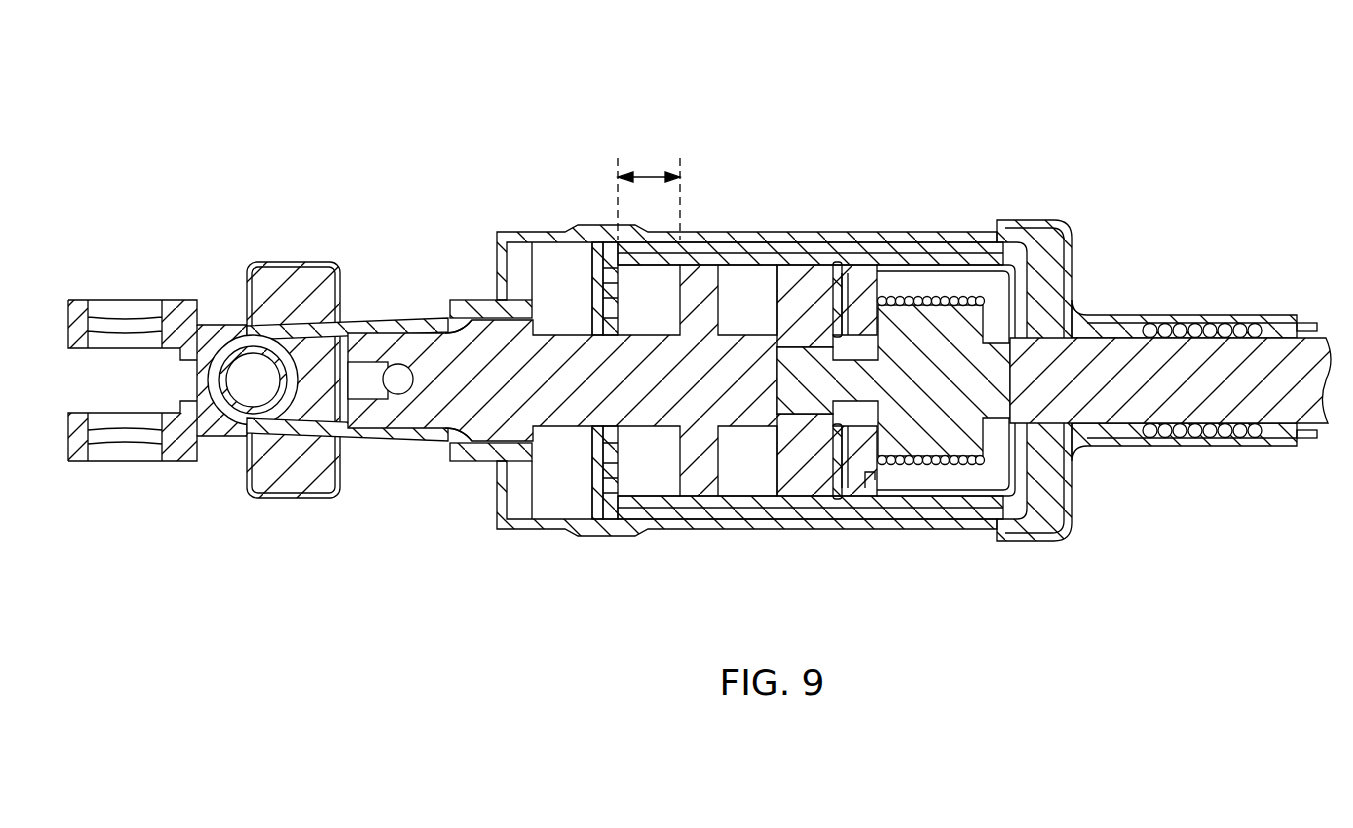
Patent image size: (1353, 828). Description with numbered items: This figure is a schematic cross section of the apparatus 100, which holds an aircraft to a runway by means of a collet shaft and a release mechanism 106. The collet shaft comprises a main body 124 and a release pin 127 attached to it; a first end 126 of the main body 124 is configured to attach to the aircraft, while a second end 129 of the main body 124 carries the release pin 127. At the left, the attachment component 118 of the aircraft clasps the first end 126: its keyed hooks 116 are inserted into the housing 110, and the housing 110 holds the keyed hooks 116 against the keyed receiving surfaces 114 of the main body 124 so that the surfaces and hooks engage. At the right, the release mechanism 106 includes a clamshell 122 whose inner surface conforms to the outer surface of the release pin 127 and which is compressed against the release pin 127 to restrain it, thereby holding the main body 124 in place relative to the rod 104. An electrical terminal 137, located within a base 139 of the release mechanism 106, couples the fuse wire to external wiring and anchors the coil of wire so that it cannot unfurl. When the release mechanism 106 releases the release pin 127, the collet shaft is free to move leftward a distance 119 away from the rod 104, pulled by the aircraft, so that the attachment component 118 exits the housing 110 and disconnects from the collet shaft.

The apparatus 100 is at (925, 127).
The rod 104 is at (1098, 357).
The release mechanism 106 is at (935, 445).
The housing 110 is at (467, 310).
The keyed receiving surfaces 114 is at (473, 412).
The keyed hooks 116 is at (458, 335).
The attachment component 118 is at (390, 434).
The distance 119 is at (647, 167).
The clamshell 122 is at (932, 342).
The main body 124 is at (590, 396).
The first end 126 is at (415, 350).
The release pin 127 is at (905, 378).
The second end 129 is at (820, 283).
The electrical terminal 137 is at (875, 487).
The base 139 is at (850, 488).